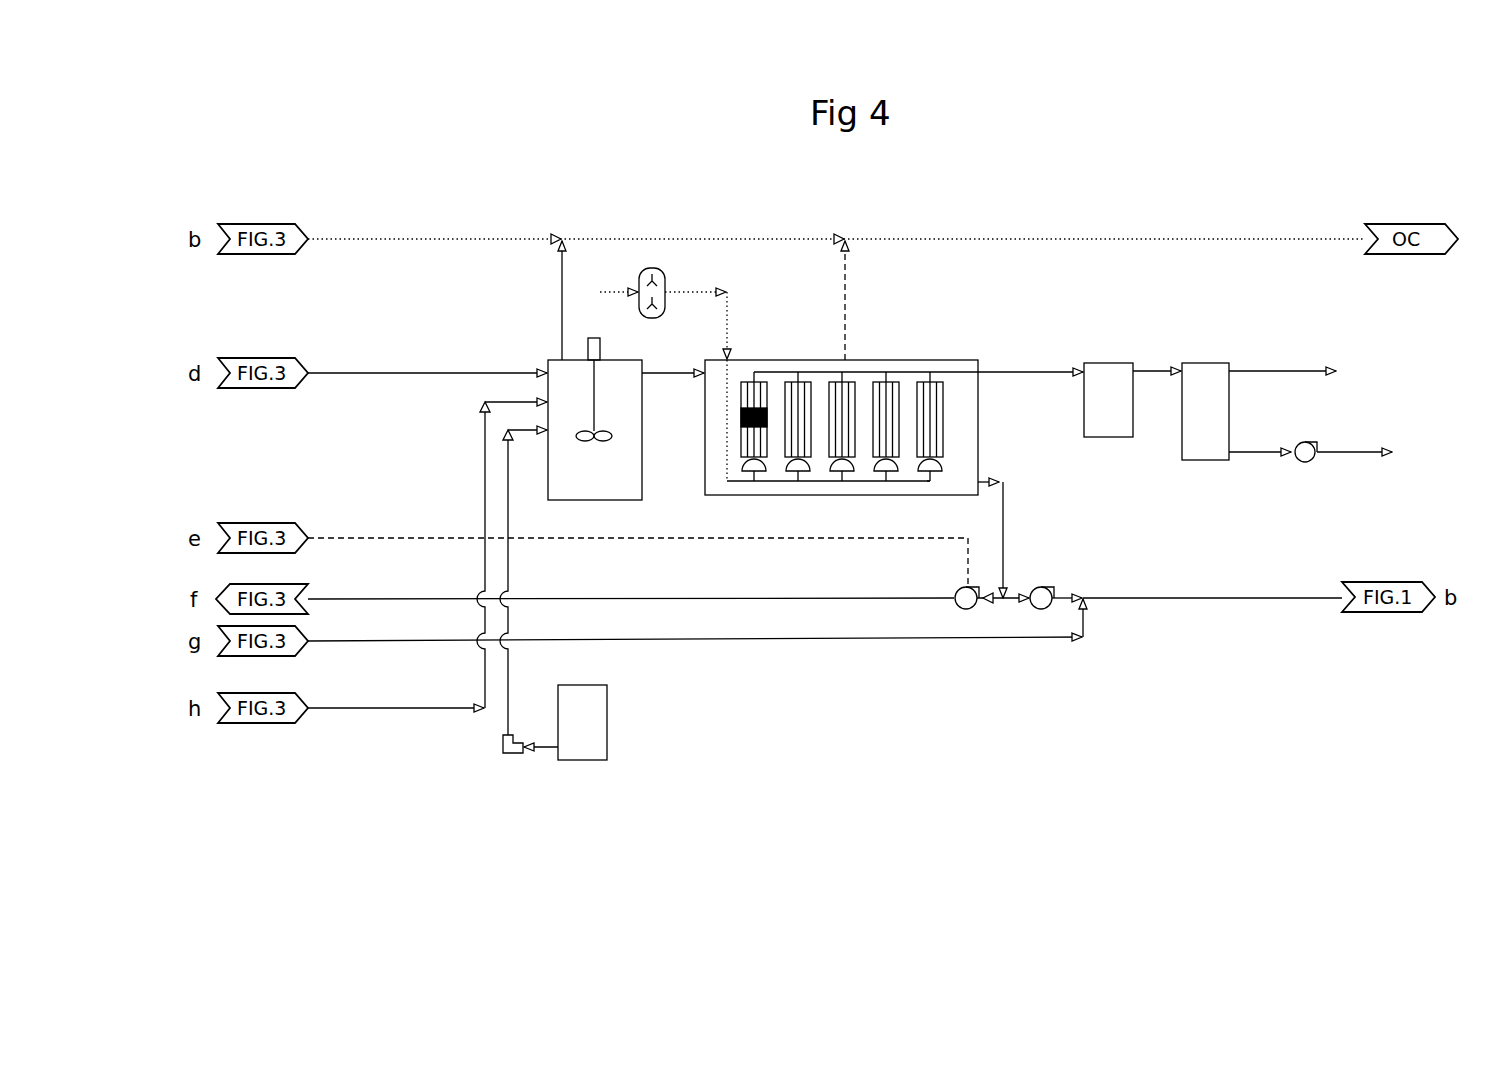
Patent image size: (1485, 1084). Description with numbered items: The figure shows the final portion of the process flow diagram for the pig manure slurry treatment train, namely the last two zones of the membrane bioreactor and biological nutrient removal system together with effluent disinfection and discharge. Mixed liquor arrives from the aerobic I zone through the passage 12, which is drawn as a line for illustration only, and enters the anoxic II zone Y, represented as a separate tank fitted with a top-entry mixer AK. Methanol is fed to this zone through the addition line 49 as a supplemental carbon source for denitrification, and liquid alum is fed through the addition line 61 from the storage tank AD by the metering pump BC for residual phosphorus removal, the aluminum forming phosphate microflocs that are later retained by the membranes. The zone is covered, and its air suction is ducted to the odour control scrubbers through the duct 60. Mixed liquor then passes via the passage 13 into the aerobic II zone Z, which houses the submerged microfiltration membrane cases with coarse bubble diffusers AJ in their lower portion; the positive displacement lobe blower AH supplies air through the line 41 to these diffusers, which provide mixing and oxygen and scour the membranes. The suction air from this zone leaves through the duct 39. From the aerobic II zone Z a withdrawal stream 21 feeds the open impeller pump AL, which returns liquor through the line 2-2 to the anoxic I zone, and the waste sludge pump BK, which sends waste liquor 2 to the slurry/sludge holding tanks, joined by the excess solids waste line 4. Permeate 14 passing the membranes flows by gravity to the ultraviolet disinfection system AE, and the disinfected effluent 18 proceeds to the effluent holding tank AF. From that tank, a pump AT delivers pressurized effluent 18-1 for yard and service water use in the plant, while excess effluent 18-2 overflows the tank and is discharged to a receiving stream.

The air duct 60 is at (545, 300).
The air duct 39 is at (862, 300).
The aerobic I to anoxic II zone passage 12 is at (427, 358).
The anoxic II to aerobic II passage 13 is at (673, 358).
The air line 41 is at (663, 313).
The permeate stream 14 is at (918, 357).
The disinfected effluent 18 is at (1157, 357).
The excess effluent 18-2 is at (1282, 357).
The pumped effluent stream 18-1 is at (1310, 438).
The liquid alum addition line 61 is at (520, 587).
The methanol addition line 49 is at (396, 693).
The excess solids waste line 4 is at (695, 626).
The liquor return line 2-2 is at (631, 584).
The drain stream from filter unit Z 21 is at (1008, 540).
The waste liquor stream 2 is at (1212, 582).
The anoxic II zone Y is at (595, 430).
The top-entry mixer AK is at (594, 376).
The positive displacement lobe blower AH is at (653, 280).
The aerobic II zone Z is at (841, 427).
The coarse bubble diffusers AJ is at (946, 482).
The ultraviolet disinfection system AE is at (1108, 400).
The effluent holding tank AF is at (1205, 411).
The pump AT is at (1303, 466).
The external open impeller pump AL is at (956, 610).
The waste sludge pump BK is at (1045, 583).
The metering pump BC is at (511, 763).
The liquid alum storage tank AD is at (565, 722).